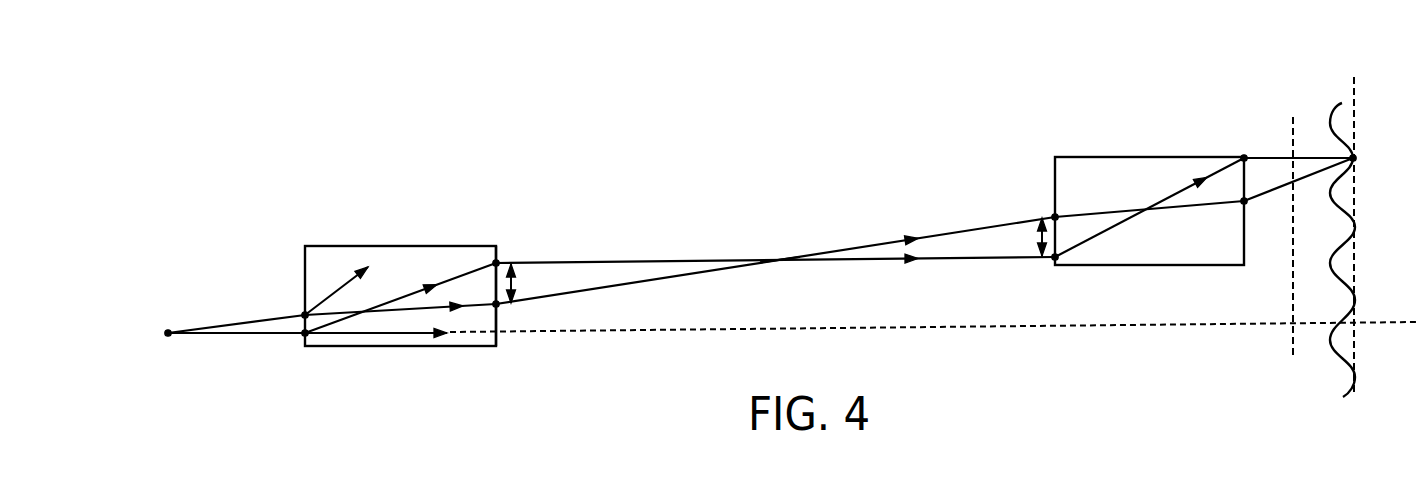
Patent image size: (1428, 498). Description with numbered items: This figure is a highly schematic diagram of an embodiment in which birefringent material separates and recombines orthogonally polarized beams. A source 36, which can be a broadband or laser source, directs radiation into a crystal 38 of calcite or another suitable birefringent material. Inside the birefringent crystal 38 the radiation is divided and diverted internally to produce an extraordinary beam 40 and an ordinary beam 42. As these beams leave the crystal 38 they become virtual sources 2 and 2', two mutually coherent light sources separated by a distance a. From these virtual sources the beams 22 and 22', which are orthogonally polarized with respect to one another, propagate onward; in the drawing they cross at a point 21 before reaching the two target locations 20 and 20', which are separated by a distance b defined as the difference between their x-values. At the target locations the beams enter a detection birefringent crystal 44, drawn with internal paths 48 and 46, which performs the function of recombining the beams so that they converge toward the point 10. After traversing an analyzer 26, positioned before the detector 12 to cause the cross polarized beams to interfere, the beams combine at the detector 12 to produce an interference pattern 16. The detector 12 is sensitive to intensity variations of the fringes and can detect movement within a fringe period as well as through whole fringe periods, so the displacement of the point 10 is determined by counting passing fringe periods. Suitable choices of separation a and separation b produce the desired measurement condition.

The source 36 is at (167, 331).
The birefringent crystal 38 is at (373, 246).
The extraordinary beam 40 is at (493, 260).
The ordinary beam 42 is at (410, 307).
The light source 2 is at (515, 247).
The light source 2' is at (519, 314).
The separation of sources a is at (521, 283).
The beam 22 is at (775, 236).
The beam 22' is at (775, 273).
The beam crossover point 21 is at (777, 259).
The detection birefringent crystal 44 is at (1188, 156).
The target location 20 is at (1035, 193).
The target location 20' is at (1027, 276).
The separation of target locations b is at (1032, 237).
The upper beam path in second optical element 48 is at (1118, 209).
The lower beam path in second optical element 46 is at (1110, 223).
The point 10 is at (1357, 158).
The analyzer 26 is at (1292, 293).
The detector 12 is at (1358, 343).
The interference pattern 16 is at (1338, 103).